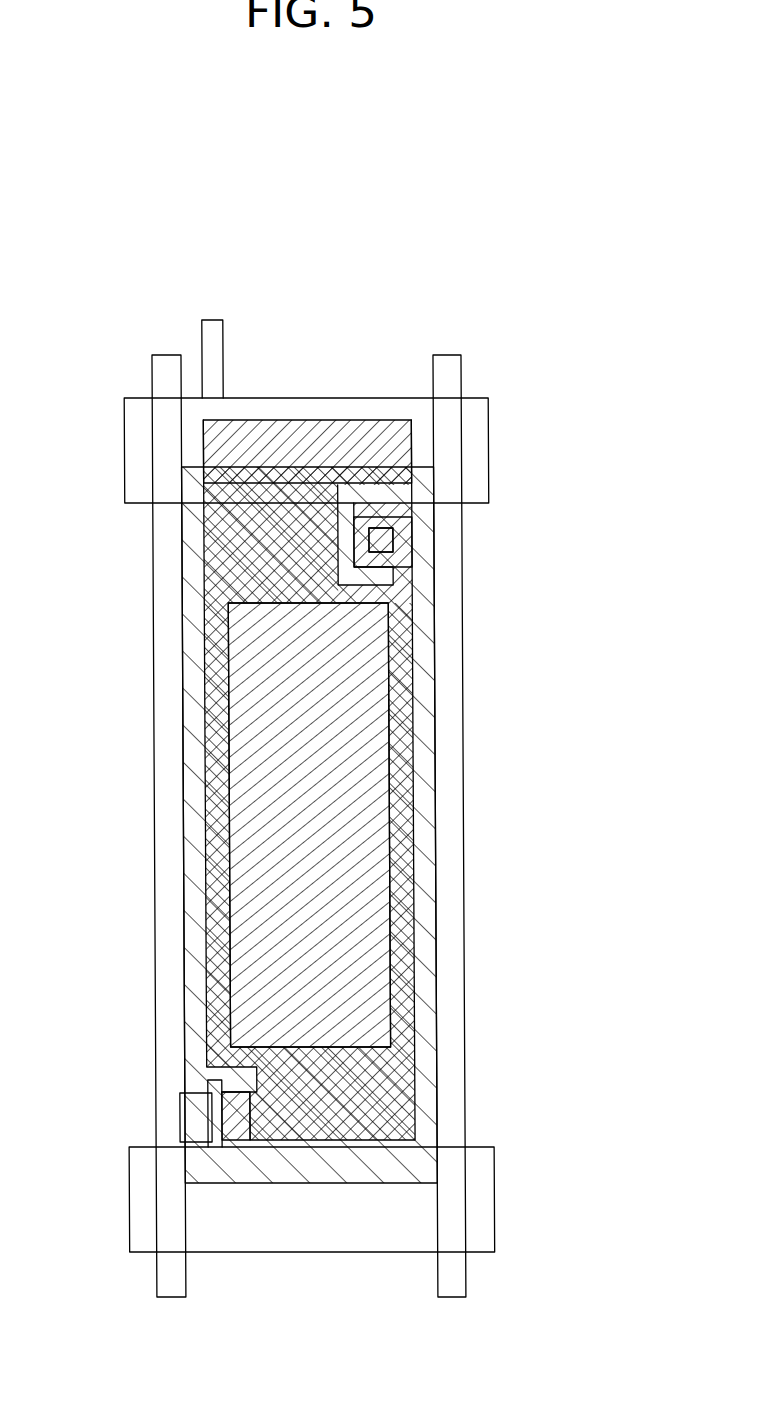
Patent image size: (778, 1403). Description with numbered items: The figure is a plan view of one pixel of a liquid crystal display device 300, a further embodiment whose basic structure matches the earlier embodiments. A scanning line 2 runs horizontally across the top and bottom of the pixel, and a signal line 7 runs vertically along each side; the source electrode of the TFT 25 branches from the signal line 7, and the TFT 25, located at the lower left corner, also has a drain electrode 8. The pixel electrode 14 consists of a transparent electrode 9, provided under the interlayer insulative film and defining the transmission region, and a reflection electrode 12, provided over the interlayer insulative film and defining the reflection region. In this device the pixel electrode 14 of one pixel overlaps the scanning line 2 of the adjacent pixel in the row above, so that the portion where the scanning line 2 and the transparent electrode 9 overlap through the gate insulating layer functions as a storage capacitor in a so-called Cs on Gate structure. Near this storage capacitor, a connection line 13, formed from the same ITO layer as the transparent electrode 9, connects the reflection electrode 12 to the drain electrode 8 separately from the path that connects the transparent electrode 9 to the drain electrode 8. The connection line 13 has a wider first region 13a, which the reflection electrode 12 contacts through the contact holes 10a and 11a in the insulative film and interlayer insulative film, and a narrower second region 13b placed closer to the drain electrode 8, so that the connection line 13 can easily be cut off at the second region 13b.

The liquid crystal display device 300 is at (524, 371).
The scanning line 2 is at (397, 407).
The signal line 7 is at (450, 697).
The transparent electrode 9 is at (392, 447).
The contact hole 10a is at (395, 536).
The contact hole 11a is at (395, 536).
The reflection electrode 12 is at (427, 797).
The connection line 13 is at (489, 555).
The first region 13a is at (407, 549).
The second region 13b is at (407, 577).
The pixel electrode 14 is at (412, 801).
The TFT 25 is at (187, 1148).
The drain electrode 8 is at (234, 1118).